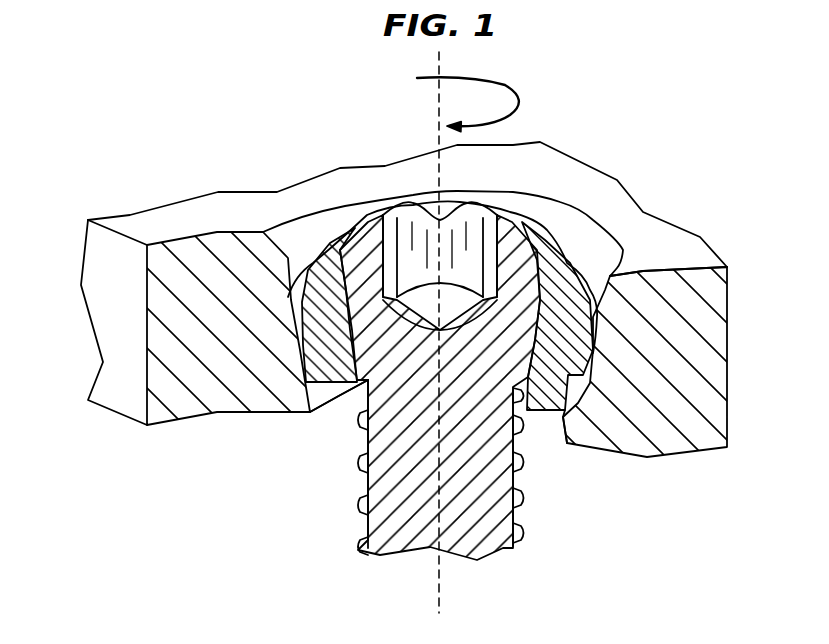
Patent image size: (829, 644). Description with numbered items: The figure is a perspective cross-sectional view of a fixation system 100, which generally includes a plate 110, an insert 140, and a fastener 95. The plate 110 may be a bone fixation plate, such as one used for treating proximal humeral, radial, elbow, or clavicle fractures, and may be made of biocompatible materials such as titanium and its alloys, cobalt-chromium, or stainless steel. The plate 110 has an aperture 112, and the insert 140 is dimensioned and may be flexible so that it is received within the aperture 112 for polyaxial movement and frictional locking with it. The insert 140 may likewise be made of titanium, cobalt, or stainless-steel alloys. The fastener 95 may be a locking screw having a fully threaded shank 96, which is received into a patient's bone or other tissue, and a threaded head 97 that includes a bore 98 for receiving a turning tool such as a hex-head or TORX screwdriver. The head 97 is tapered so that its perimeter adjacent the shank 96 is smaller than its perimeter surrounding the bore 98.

The fixation system 100 is at (155, 103).
The plate 110 is at (212, 416).
The aperture 112 is at (320, 203).
The threaded head 97 is at (497, 322).
The bore 98 is at (420, 233).
The fastener 95 is at (358, 441).
The fully threaded shank 96 is at (423, 498).
The insert 140 is at (543, 418).